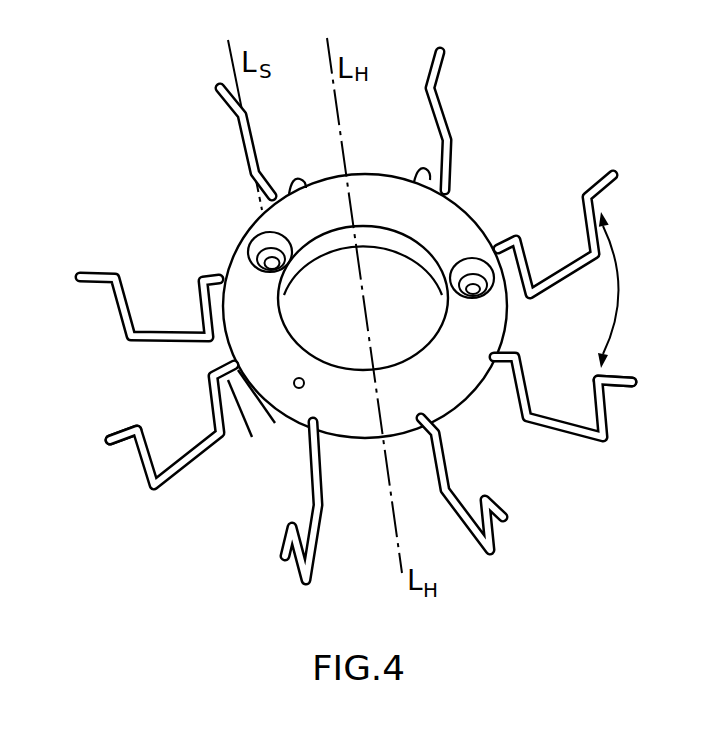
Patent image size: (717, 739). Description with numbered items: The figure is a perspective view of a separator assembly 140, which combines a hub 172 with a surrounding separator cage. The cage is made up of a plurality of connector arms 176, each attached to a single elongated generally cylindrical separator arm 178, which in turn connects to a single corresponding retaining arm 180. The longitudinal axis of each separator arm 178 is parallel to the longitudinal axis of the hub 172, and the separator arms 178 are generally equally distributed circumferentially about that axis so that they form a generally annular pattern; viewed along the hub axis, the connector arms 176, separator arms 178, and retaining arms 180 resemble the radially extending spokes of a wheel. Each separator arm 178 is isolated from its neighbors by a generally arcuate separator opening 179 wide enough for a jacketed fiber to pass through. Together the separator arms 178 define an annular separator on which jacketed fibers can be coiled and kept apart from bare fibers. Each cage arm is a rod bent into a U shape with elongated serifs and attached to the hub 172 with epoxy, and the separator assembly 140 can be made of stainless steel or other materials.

The separator assembly 140 is at (569, 517).
The hub 172 is at (460, 228).
The connector arm 176 is at (227, 421).
The separator arm 178 is at (118, 313).
The separator opening 179 is at (647, 280).
The retaining arm 180 is at (113, 449).